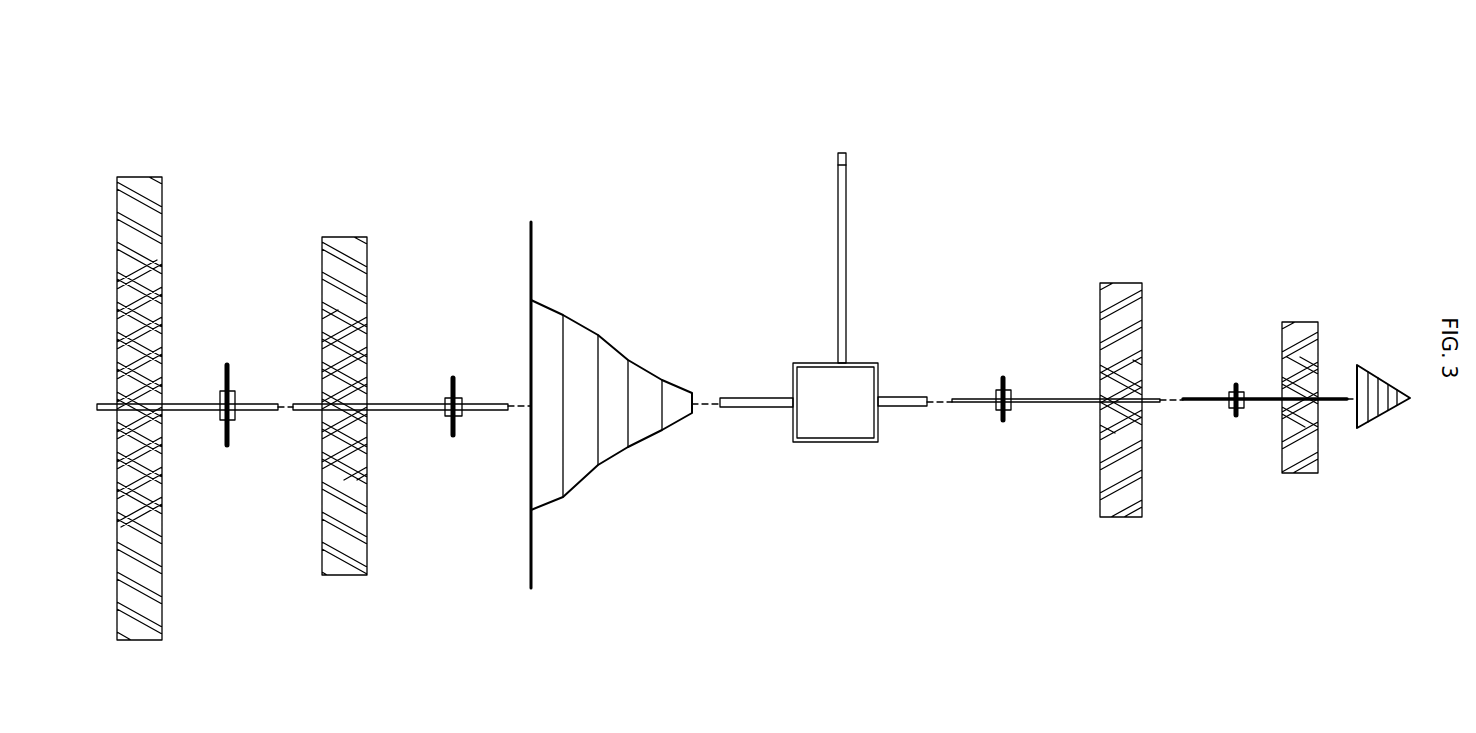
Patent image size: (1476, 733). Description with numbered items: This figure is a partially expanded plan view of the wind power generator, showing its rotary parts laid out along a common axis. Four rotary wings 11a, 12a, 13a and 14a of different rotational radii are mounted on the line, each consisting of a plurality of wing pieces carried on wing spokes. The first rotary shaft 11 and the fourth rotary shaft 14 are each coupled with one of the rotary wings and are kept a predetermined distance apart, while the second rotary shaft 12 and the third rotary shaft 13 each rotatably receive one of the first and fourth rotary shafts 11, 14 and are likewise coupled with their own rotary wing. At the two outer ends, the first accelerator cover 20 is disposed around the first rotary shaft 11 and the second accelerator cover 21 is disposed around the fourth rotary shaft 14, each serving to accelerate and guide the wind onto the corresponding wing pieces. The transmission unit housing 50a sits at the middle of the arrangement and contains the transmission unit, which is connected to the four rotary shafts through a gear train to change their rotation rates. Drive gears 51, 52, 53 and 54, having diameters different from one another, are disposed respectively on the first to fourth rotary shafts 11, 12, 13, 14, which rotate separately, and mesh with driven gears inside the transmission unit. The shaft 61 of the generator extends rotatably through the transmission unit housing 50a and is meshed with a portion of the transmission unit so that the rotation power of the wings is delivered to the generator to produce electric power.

The first rotary shaft 11 is at (1205, 398).
The first rotary wing 11a is at (1303, 474).
The second rotary shaft 12 is at (1051, 400).
The second rotary wing 12a is at (1118, 518).
The third rotary shaft 13 is at (406, 402).
The third rotary wing 13a is at (340, 237).
The fourth rotary shaft 14 is at (185, 402).
The fourth rotary wing 14a is at (147, 178).
The first accelerator cover 20 is at (1383, 420).
The second accelerator cover 21 is at (612, 457).
The transmission unit housing 50a is at (793, 365).
The drive gear 51 is at (1236, 418).
The drive gear 52 is at (1003, 422).
The drive gear 53 is at (453, 437).
The drive gear 54 is at (227, 447).
The shaft 61 is at (838, 262).